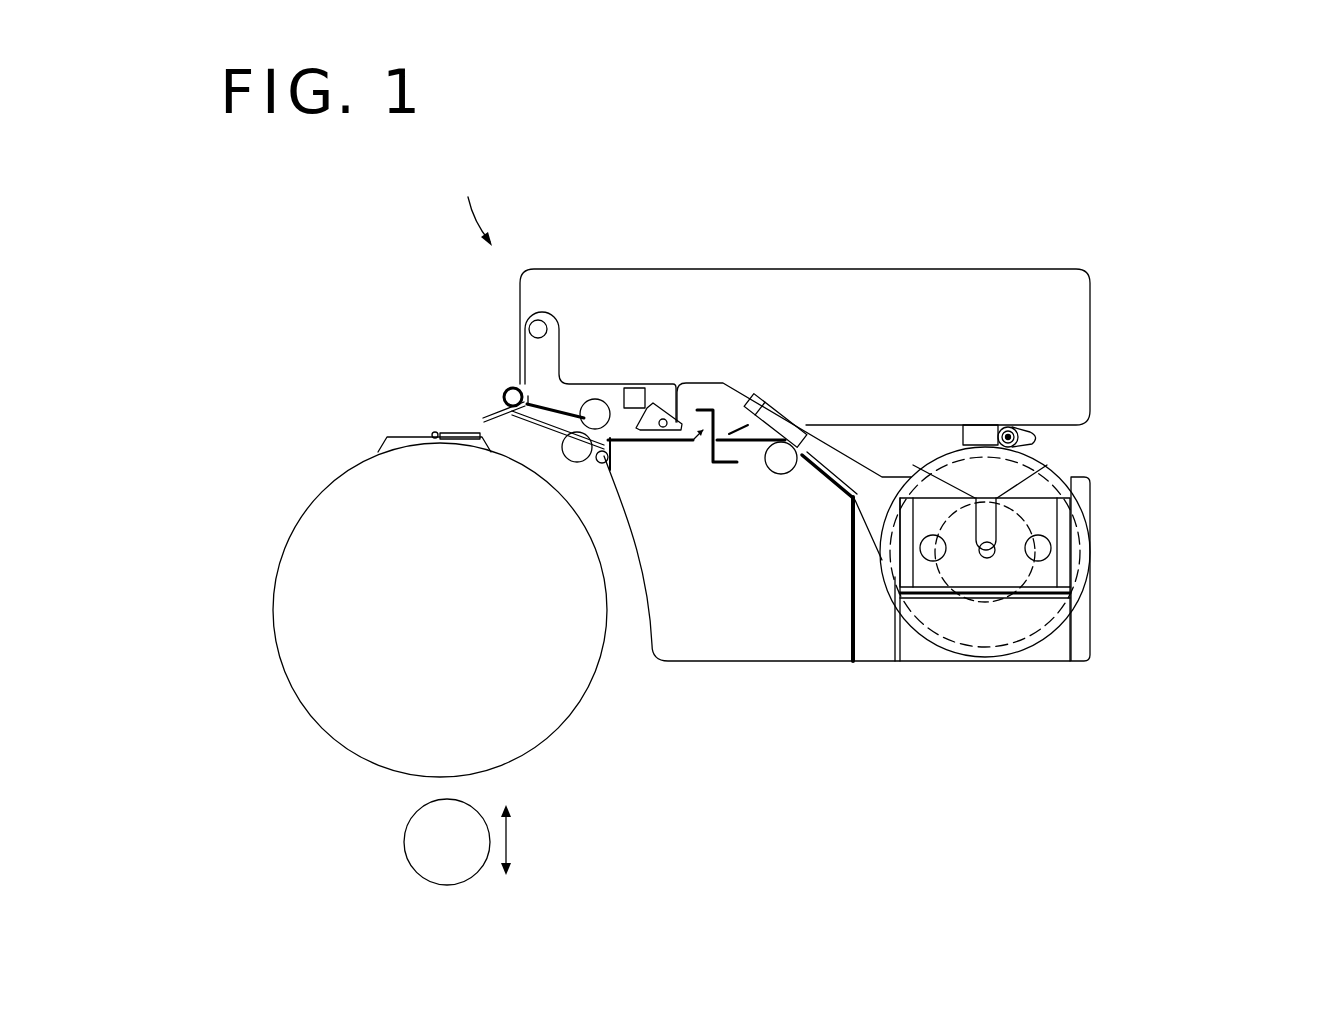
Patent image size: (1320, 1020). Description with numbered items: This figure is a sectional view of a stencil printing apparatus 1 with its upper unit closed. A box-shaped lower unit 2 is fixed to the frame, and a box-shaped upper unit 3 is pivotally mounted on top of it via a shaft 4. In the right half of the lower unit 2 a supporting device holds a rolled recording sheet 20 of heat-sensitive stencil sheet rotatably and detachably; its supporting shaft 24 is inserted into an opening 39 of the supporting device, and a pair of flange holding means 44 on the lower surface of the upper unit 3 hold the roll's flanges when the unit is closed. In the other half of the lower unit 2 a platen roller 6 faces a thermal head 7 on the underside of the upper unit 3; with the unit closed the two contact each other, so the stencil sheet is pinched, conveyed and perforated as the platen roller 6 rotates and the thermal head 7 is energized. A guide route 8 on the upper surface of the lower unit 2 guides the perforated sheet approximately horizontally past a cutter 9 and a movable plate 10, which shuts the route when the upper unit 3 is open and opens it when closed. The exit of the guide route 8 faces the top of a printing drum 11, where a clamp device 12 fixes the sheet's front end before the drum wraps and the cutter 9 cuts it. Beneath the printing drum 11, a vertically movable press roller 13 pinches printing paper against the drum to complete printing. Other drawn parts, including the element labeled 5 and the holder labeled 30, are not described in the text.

The stencil printing apparatus 1 is at (473, 206).
The lower unit 2 is at (892, 664).
The upper unit 3 is at (965, 269).
The shaft 4 is at (534, 326).
The partition wall 5 is at (830, 648).
The platen roller 6 is at (797, 457).
The thermal head 7 is at (780, 420).
The guide route 8 is at (548, 397).
The cutter 9 is at (712, 468).
The movable plate 10 is at (653, 407).
The printing drum 11 is at (272, 592).
The clamp device 12 is at (448, 431).
The press roller 13 is at (403, 858).
The rolled recording sheet 20 is at (1043, 458).
The supporting shaft 24 is at (987, 556).
The cassette holder 30 is at (1047, 518).
The opening 39 is at (997, 533).
The flange holding means 44 is at (1037, 427).